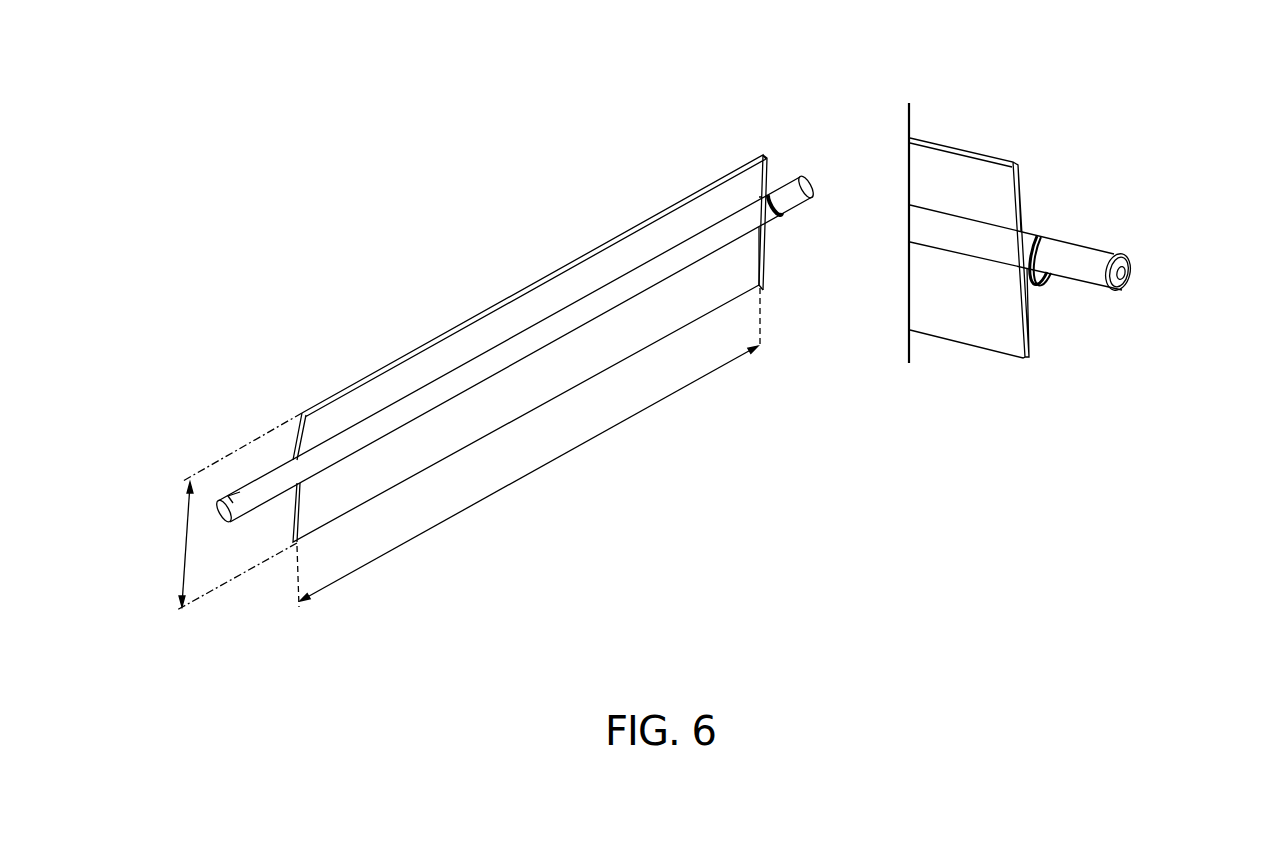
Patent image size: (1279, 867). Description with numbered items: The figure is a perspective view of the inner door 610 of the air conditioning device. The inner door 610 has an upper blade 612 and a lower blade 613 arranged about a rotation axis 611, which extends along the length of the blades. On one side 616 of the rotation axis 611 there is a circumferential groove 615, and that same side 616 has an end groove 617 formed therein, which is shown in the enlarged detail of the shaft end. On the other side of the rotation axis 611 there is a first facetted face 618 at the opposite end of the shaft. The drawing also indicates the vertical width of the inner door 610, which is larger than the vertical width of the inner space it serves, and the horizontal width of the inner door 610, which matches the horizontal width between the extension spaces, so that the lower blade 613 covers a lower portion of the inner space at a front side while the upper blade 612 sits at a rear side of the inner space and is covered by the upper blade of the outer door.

The inner door 610 is at (519, 326).
The rotation axis 611 is at (730, 230).
The upper blade 612 is at (687, 220).
The lower blade 613 is at (700, 293).
The circumferential groove 615 is at (1037, 246).
The one side 616 is at (1132, 262).
The end groove 617 is at (1125, 274).
The first facetted face 618 is at (222, 508).